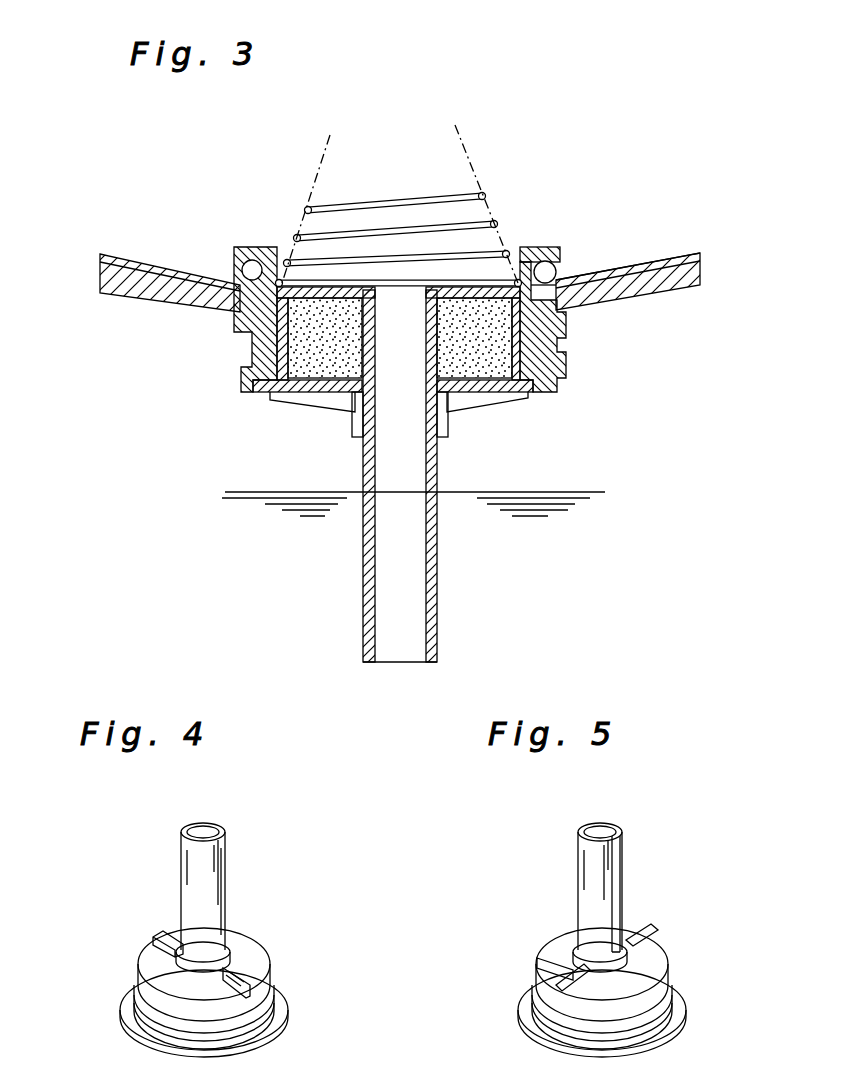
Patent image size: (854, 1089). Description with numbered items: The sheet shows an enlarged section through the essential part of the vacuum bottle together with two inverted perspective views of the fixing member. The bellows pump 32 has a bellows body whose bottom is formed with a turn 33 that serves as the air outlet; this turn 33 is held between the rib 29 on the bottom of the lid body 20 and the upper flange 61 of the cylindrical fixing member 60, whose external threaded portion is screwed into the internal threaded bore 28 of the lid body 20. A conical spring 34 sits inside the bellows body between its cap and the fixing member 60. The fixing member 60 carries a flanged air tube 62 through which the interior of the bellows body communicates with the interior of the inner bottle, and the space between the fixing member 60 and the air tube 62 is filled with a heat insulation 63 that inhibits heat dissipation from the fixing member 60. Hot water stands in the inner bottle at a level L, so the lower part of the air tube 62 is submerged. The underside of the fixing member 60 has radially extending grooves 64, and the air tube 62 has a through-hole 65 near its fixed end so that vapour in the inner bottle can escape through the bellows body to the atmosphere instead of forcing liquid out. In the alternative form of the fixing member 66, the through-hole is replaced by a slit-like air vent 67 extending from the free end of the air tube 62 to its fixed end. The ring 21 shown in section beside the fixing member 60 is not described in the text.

In FIG. 3, the lid body 20 is at (653, 295).
In FIG. 3, the threaded ring 21 is at (563, 345).
In FIG. 3, the internal threaded bore 28 is at (545, 387).
In FIG. 3, the rib 29 is at (537, 246).
In FIG. 3, the bellows pump 32 is at (673, 255).
In FIG. 3, the turn 33 is at (560, 286).
In FIG. 3, the conical spring 34 is at (442, 197).
In FIG. 3, the fixing member 60 is at (438, 381).
In FIG. 4, the fixing member 60 is at (215, 971).
In FIG. 3, the upper flange 61 is at (552, 264).
In FIG. 4, the upper flange 61 is at (280, 1005).
In FIG. 5, the upper flange 61 is at (528, 1010).
In FIG. 3, the air tube 62 is at (441, 515).
In FIG. 4, the air tube 62 is at (228, 860).
In FIG. 5, the air tube 62 is at (585, 870).
In FIG. 3, the heat insulation 63 is at (331, 360).
In FIG. 3, the grooves 64 is at (290, 398).
In FIG. 4, the grooves 64 is at (166, 930).
In FIG. 5, the grooves 64 is at (640, 935).
In FIG. 3, the through-hole 65 is at (432, 395).
In FIG. 4, the through-hole 65 is at (232, 975).
In FIG. 5, the modified cap 66 is at (565, 971).
In FIG. 5, the slit-like air vent 67 is at (620, 888).
In FIG. 3, the level L is at (401, 495).